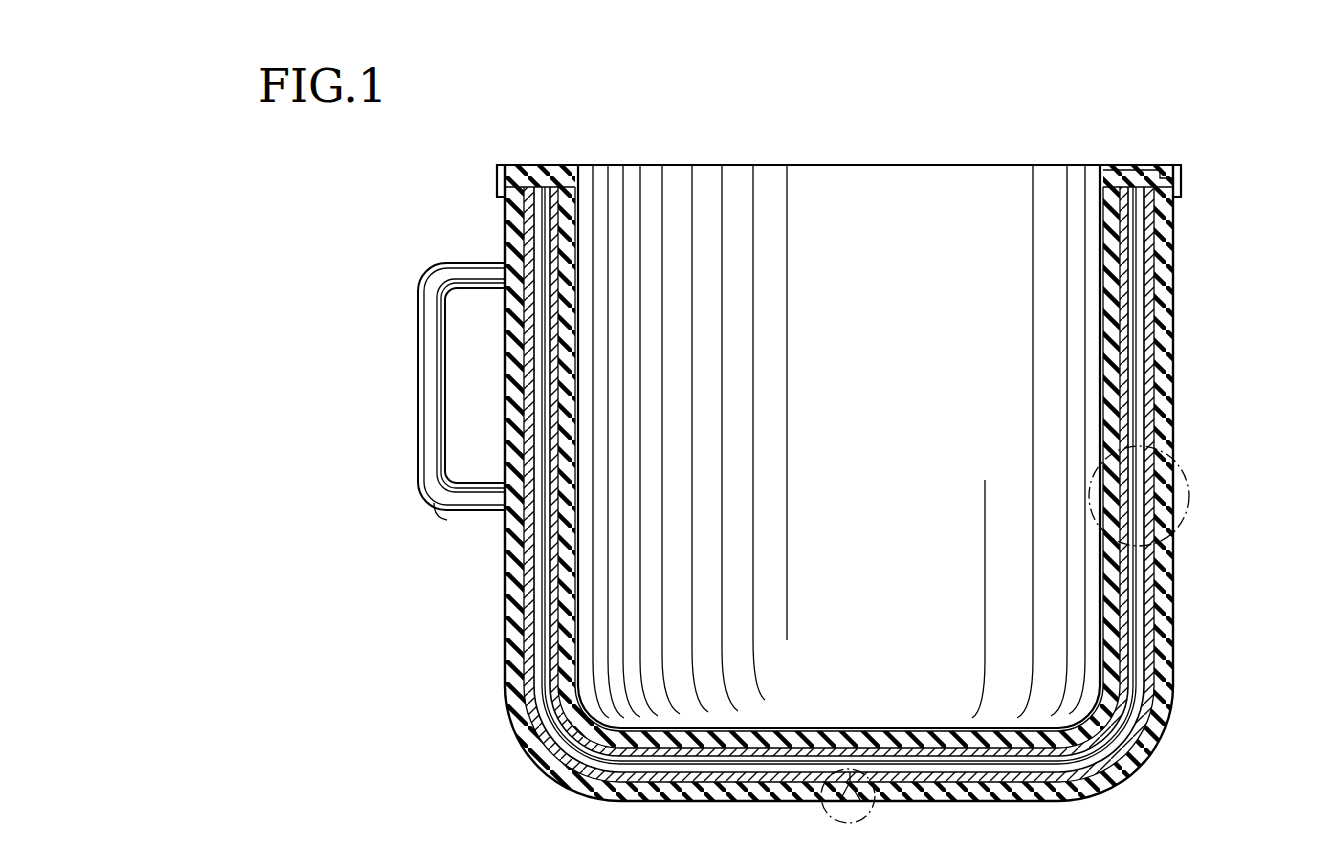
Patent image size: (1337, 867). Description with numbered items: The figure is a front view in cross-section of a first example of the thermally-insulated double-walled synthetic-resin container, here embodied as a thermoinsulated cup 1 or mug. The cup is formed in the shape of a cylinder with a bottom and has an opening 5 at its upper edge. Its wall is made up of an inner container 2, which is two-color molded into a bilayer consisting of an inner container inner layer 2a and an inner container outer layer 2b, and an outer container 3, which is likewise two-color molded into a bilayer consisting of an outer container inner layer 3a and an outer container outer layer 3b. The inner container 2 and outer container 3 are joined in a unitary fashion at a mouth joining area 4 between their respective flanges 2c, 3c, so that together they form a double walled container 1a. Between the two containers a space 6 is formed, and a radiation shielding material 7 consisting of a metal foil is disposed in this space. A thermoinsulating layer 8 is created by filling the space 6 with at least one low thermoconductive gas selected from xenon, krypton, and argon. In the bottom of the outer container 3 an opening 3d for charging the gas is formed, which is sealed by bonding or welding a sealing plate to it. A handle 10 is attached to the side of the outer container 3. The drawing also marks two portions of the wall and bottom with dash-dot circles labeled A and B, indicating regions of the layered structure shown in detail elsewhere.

The thermoinsulated cup 1 is at (541, 134).
The double walled container 1a is at (887, 453).
The inner container 2 is at (898, 431).
The inner container inner layer 2a is at (1128, 388).
The inner container outer layer 2b is at (1115, 424).
The flange 2c is at (1142, 164).
The outer container 3 is at (876, 479).
The outer container inner layer 3a is at (1160, 596).
The outer container outer layer 3b is at (1150, 547).
The flange 3c is at (1180, 176).
The opening for charging gas 3d is at (850, 768).
The mouth joining area 4 is at (1178, 172).
The opening 5 is at (1025, 164).
The space 6 is at (1142, 657).
The radiation shielding material 7 is at (1140, 341).
The thermoinsulating layer 8 is at (537, 646).
The handle 10 is at (441, 512).
The enlarged portion A is at (1087, 497).
The enlarged portion B is at (831, 816).